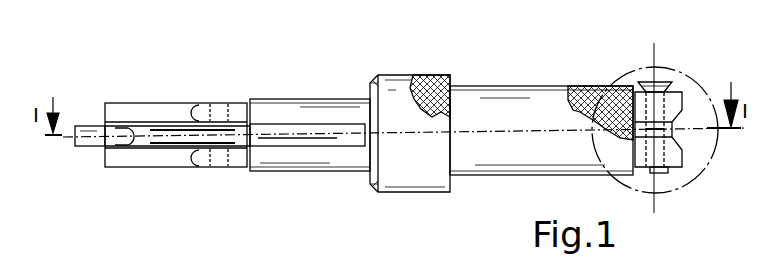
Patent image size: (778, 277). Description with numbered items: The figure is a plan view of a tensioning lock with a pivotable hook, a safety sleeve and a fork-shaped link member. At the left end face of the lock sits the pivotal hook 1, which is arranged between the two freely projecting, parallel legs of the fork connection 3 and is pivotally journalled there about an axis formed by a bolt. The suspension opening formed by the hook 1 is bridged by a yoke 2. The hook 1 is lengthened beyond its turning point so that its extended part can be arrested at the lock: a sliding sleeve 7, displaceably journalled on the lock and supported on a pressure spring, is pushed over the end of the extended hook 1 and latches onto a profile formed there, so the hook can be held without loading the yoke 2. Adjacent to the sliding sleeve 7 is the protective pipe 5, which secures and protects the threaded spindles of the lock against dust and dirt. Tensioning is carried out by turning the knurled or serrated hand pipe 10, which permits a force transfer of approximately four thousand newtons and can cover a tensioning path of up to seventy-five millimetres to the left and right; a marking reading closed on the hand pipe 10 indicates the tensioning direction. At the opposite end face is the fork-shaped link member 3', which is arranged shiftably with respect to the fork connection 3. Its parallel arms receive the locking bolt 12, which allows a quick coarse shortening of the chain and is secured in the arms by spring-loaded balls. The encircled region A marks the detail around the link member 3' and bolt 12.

The pivotal hook 1 is at (92, 143).
The yoke 2 is at (137, 112).
The fork connection 3 is at (215, 135).
The protective pipe 5 is at (295, 158).
The sliding sleeve 7 is at (403, 108).
The hand pipe 10 is at (565, 118).
The locking bolt 12 is at (668, 80).
The fork-shaped link member 3' is at (679, 173).
The detail region A is at (717, 147).